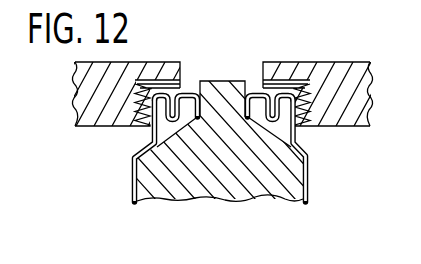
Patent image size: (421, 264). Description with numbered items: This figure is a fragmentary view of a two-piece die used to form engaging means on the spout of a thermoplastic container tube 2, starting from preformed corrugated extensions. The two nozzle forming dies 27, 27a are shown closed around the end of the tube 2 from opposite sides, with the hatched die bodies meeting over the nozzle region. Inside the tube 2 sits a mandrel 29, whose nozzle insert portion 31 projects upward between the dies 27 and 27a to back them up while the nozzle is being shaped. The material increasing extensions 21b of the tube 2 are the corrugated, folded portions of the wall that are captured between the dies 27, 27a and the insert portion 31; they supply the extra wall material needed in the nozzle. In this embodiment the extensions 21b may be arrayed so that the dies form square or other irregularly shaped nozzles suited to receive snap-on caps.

The tube 2 is at (309, 172).
The material increasing extensions 21b is at (257, 90).
The nozzle forming die 27 is at (152, 65).
The nozzle forming die 27a is at (328, 67).
The mandrel 29 is at (234, 187).
The nozzle insert portion 31 is at (228, 85).